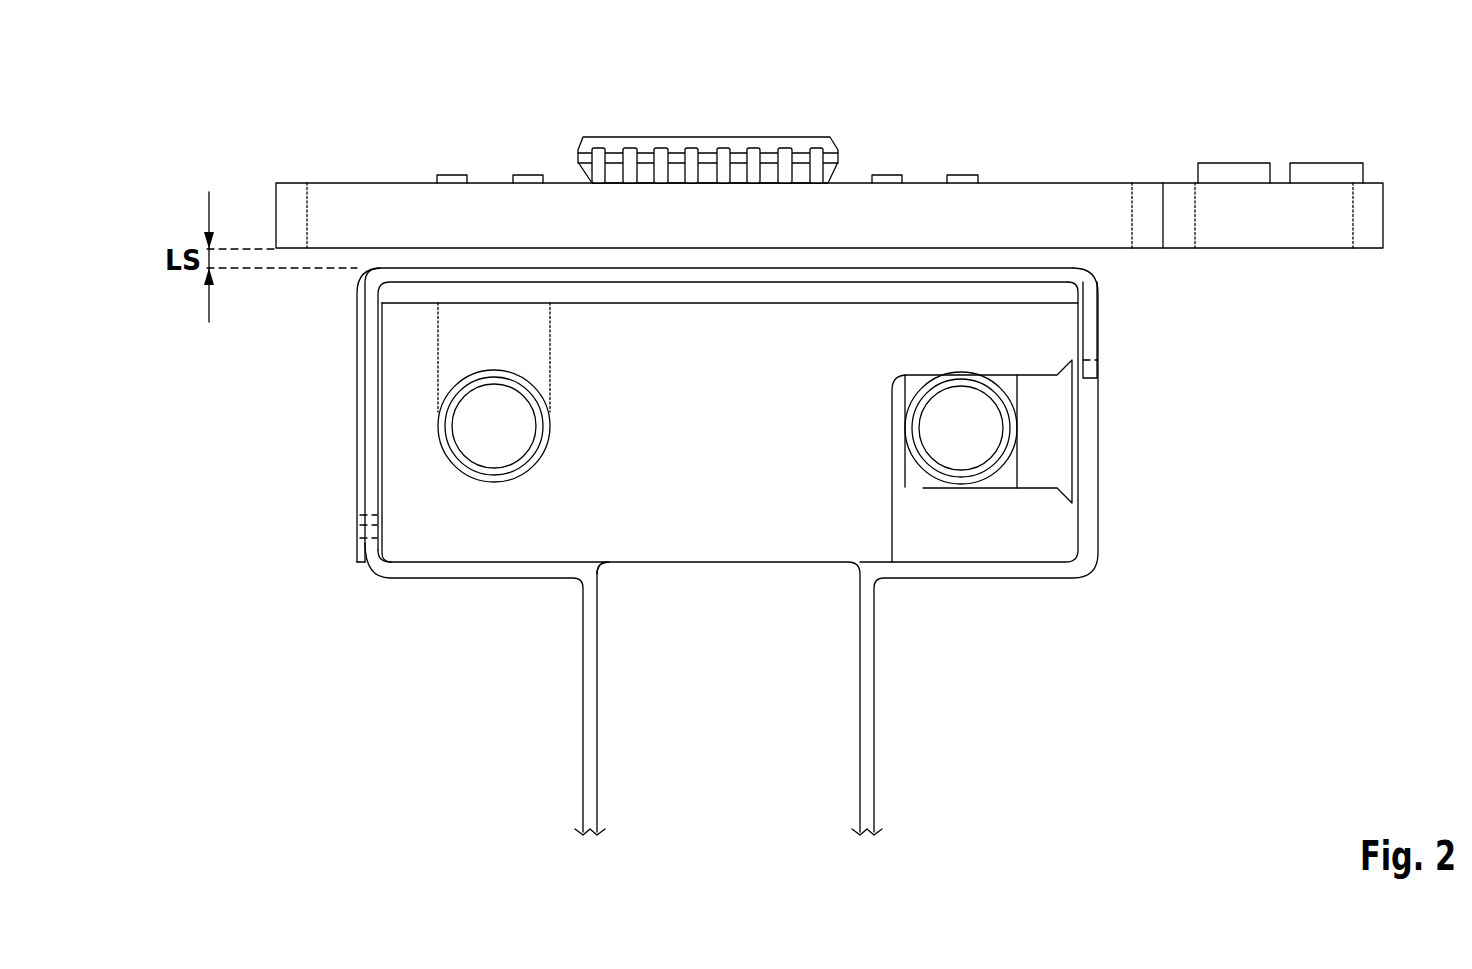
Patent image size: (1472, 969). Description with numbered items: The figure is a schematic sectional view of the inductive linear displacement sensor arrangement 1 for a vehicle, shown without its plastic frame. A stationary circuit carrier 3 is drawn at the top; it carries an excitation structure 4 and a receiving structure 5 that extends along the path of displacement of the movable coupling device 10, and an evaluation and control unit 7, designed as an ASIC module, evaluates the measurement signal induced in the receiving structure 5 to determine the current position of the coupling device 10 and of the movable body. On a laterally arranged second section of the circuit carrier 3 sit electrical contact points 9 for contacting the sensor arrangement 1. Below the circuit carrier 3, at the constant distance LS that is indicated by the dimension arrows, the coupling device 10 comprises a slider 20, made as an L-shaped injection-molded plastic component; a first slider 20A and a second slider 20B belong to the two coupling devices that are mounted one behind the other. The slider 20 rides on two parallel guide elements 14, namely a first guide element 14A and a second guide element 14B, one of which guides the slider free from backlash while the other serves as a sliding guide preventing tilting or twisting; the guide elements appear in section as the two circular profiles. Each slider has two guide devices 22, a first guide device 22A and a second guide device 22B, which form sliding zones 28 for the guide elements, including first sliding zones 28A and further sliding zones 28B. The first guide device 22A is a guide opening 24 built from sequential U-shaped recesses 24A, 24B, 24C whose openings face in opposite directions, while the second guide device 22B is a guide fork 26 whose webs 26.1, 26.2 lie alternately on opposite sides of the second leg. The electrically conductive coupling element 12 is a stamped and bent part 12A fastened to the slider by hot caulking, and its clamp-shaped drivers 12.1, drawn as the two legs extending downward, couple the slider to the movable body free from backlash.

The inductive linear displacement sensor arrangement 1 is at (235, 125).
The circuit carrier 3 is at (358, 205).
The excitation structure 4 is at (315, 273).
The receiving structure 5 is at (704, 257).
The evaluation and control unit 7 is at (708, 135).
The electrical contact points 9 is at (1327, 175).
The movable coupling device 10 is at (182, 380).
The electrically conductive coupling element 12 is at (1119, 314).
The stamped and bent part 12A is at (1041, 273).
The drivers 12.1 is at (590, 770).
The guide elements 14 is at (727, 427).
The first guide element 14A is at (528, 425).
The second guide element 14B is at (937, 427).
The slider 20 is at (784, 551).
The first slider 20A is at (715, 543).
The second slider 20B is at (1048, 430).
The guide devices 22 is at (738, 261).
The first guide device 22A is at (495, 318).
The second guide device 22B is at (960, 318).
The guide opening 24 is at (740, 432).
The U-shaped recess 24A is at (540, 467).
The U-shaped recess 24B is at (455, 367).
The U-shaped recess 24C is at (925, 470).
The guide fork 26 is at (1134, 436).
The web 26.1 is at (1050, 328).
The web 26.2 is at (1052, 533).
The sliding zones 28 is at (736, 491).
The first sliding zones 28A is at (516, 370).
The sliding zone 28B is at (962, 371).